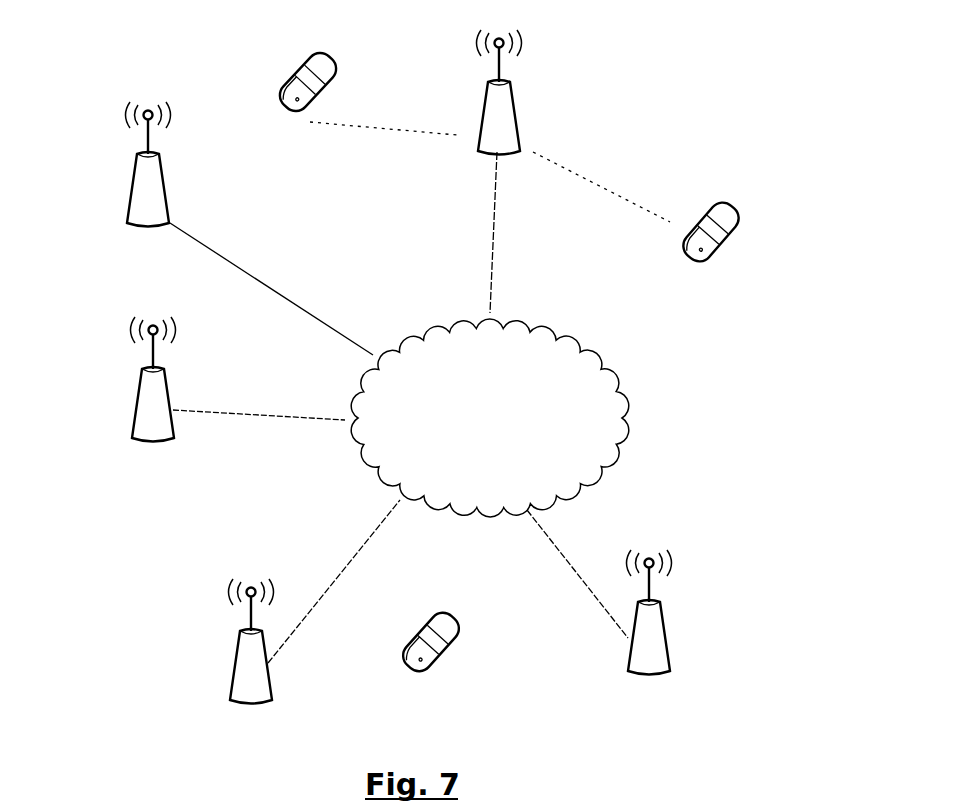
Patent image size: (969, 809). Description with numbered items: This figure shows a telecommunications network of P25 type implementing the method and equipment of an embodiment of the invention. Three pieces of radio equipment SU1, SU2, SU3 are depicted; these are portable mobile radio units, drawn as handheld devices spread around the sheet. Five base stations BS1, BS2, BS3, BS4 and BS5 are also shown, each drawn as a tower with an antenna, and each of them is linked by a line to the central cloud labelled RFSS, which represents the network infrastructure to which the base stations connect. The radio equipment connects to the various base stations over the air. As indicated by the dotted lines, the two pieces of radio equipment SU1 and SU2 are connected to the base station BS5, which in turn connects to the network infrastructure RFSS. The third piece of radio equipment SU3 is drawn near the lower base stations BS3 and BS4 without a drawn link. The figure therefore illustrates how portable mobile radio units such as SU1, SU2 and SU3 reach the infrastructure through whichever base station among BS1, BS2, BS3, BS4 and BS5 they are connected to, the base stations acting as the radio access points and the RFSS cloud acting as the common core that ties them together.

The base station BS1 is at (138, 240).
The base station BS2 is at (140, 448).
The base station BS3 is at (227, 682).
The base station BS4 is at (625, 672).
The base station BS5 is at (472, 105).
The radio equipment SU1 is at (272, 77).
The radio equipment SU2 is at (673, 237).
The radio equipment SU3 is at (407, 678).
The radio frequency sub-system (RFSS) network RFSS is at (490, 418).